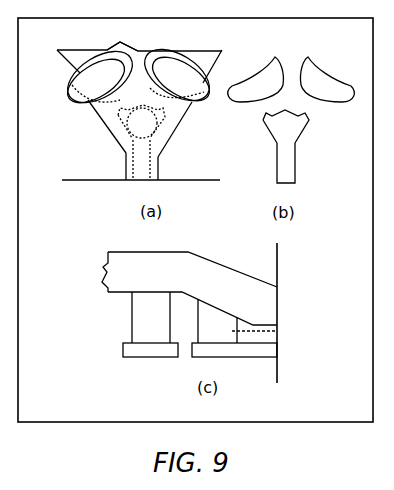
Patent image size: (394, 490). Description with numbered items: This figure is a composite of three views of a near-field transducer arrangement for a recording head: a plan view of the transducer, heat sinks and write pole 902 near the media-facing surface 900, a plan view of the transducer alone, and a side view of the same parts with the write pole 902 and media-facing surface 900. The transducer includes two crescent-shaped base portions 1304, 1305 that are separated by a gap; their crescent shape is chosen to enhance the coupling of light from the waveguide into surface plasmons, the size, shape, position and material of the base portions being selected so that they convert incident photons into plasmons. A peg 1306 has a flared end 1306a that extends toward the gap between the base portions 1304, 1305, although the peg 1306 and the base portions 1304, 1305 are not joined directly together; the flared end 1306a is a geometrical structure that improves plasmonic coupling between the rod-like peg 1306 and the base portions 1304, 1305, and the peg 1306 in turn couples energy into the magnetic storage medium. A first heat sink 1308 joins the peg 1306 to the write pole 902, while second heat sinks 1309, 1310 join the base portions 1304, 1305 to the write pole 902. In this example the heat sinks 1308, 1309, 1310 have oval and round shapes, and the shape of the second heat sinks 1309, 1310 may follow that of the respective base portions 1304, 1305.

The media-facing surface 900 is at (97, 181).
The write pole 902 is at (92, 50).
The first crescent-shaped base portion 1304 is at (97, 112).
The second crescent-shaped base portion 1305 is at (188, 112).
The peg 1306 is at (138, 168).
The flared end 1306a is at (262, 118).
The first heat sink 1308 is at (133, 123).
The second heat sink 1309 is at (82, 75).
The second heat sink 1310 is at (166, 50).